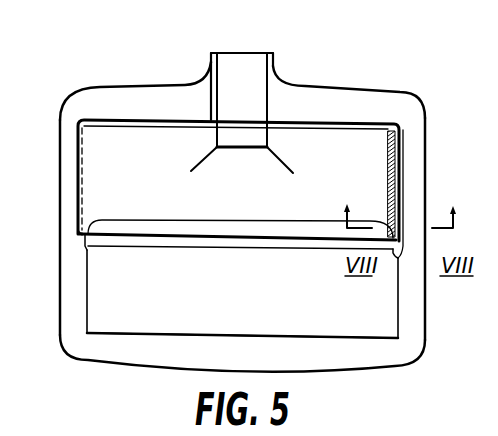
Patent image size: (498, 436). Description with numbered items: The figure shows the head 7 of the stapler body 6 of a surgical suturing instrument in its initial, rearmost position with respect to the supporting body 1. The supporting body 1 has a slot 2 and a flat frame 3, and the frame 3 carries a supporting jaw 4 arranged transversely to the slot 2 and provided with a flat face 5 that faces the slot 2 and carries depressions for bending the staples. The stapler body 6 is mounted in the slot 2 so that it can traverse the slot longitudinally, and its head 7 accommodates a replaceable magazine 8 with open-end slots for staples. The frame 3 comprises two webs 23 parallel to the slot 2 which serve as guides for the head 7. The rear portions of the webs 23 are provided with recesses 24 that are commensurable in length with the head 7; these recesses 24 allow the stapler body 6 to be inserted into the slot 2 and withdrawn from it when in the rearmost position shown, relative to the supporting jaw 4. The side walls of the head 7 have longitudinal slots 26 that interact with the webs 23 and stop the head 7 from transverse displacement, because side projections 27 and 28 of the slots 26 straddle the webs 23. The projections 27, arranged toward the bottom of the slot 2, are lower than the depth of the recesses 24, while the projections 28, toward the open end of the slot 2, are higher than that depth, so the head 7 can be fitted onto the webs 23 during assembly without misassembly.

The supporting body 1 is at (251, 91).
The slot 2 is at (260, 65).
The flat frame 3 is at (360, 107).
The supporting jaw 4 is at (322, 356).
The flat face 5 is at (337, 333).
The stapler body 6 is at (256, 114).
The head 7 is at (338, 140).
The replaceable magazine 8 is at (117, 240).
The webs 23 is at (62, 282).
The recesses 24 is at (80, 243).
The longitudinal slots 26 is at (395, 163).
The side projections 27 is at (402, 178).
The side projections 28 is at (76, 177).